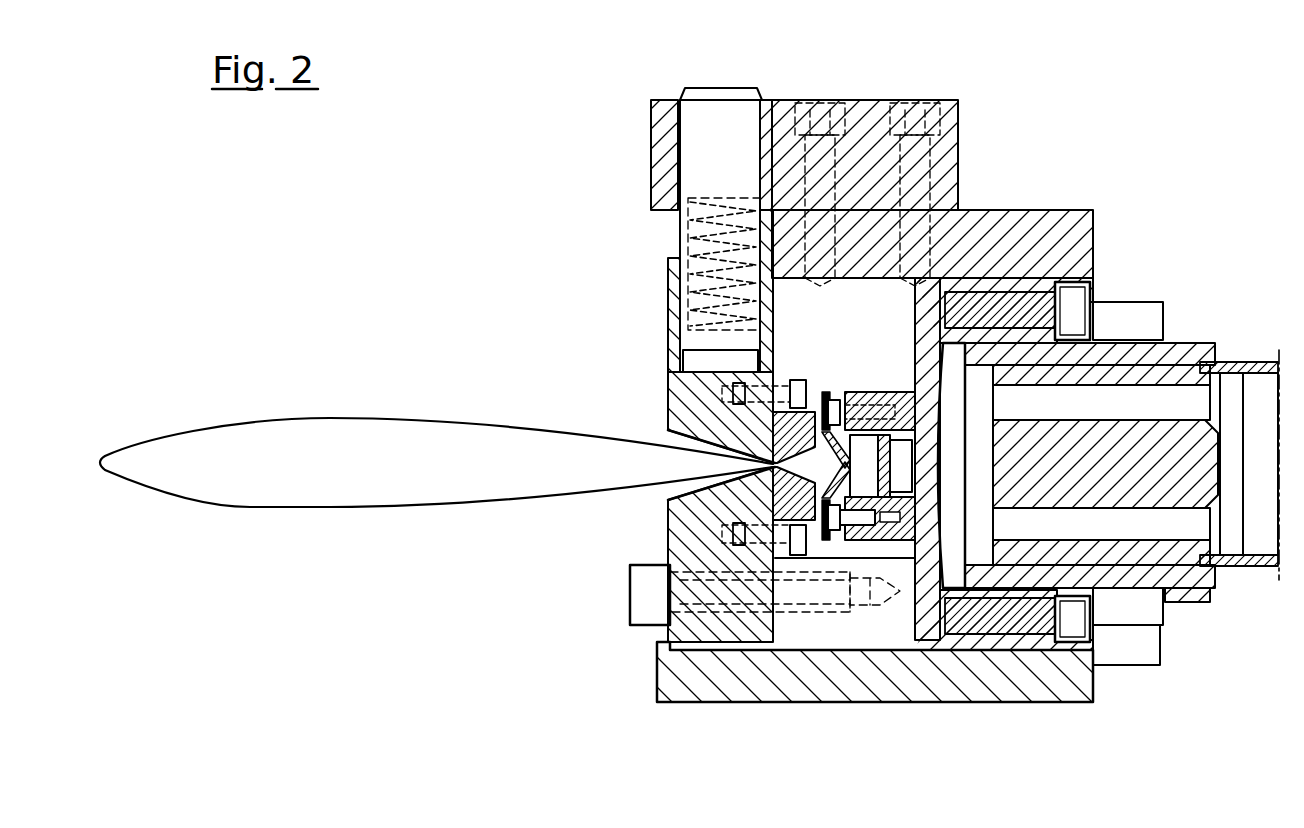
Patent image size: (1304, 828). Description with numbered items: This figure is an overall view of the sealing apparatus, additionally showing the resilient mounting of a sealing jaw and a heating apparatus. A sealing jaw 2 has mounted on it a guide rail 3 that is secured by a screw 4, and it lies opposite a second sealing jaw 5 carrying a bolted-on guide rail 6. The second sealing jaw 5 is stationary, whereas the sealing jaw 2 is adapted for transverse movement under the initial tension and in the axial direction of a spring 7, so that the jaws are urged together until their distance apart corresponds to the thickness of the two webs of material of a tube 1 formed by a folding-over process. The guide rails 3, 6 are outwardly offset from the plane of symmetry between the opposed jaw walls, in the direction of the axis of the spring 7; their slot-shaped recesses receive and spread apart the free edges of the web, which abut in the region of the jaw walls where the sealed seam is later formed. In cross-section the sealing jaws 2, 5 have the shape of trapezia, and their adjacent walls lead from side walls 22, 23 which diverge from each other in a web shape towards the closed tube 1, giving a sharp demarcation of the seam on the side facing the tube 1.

The tube 1 is at (300, 508).
The sealing jaw 2 is at (683, 397).
The guide rail 3 is at (812, 412).
The screw 4 is at (798, 380).
The second sealing jaw 5 is at (667, 631).
The guide rail 6 is at (798, 556).
The spring 7 is at (693, 235).
The side wall 22 is at (730, 445).
The side wall 23 is at (688, 493).